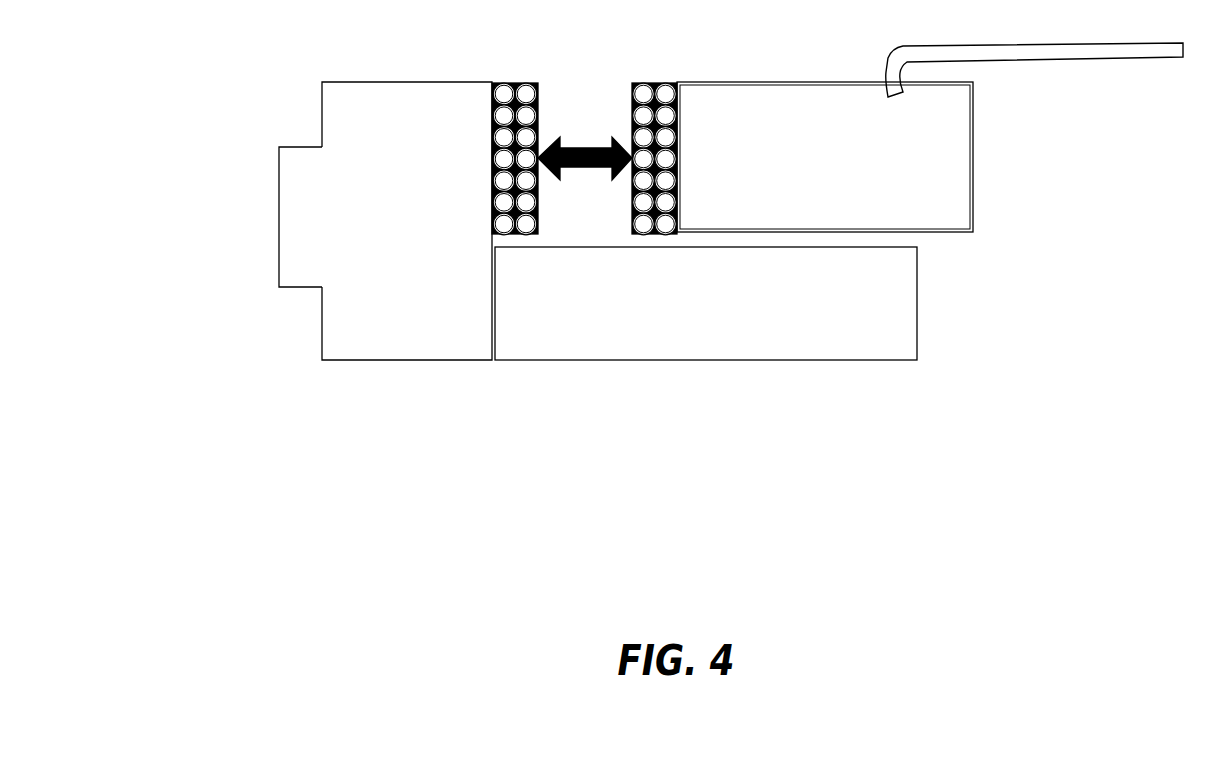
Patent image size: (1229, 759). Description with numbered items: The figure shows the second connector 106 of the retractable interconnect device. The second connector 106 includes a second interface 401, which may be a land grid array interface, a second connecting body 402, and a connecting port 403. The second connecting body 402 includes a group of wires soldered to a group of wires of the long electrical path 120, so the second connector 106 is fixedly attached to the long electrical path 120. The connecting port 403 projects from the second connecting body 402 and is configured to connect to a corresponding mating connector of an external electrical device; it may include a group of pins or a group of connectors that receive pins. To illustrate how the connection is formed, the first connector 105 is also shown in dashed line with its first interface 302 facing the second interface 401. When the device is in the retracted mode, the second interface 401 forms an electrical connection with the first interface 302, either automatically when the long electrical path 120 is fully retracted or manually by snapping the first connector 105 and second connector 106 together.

The first connector 105 is at (992, 178).
The second connector 106 is at (253, 365).
The long electrical path 120 is at (706, 303).
The first interface 302 is at (660, 86).
The second interface 401 is at (515, 86).
The second connecting body 402 is at (370, 233).
The connecting port 403 is at (278, 220).